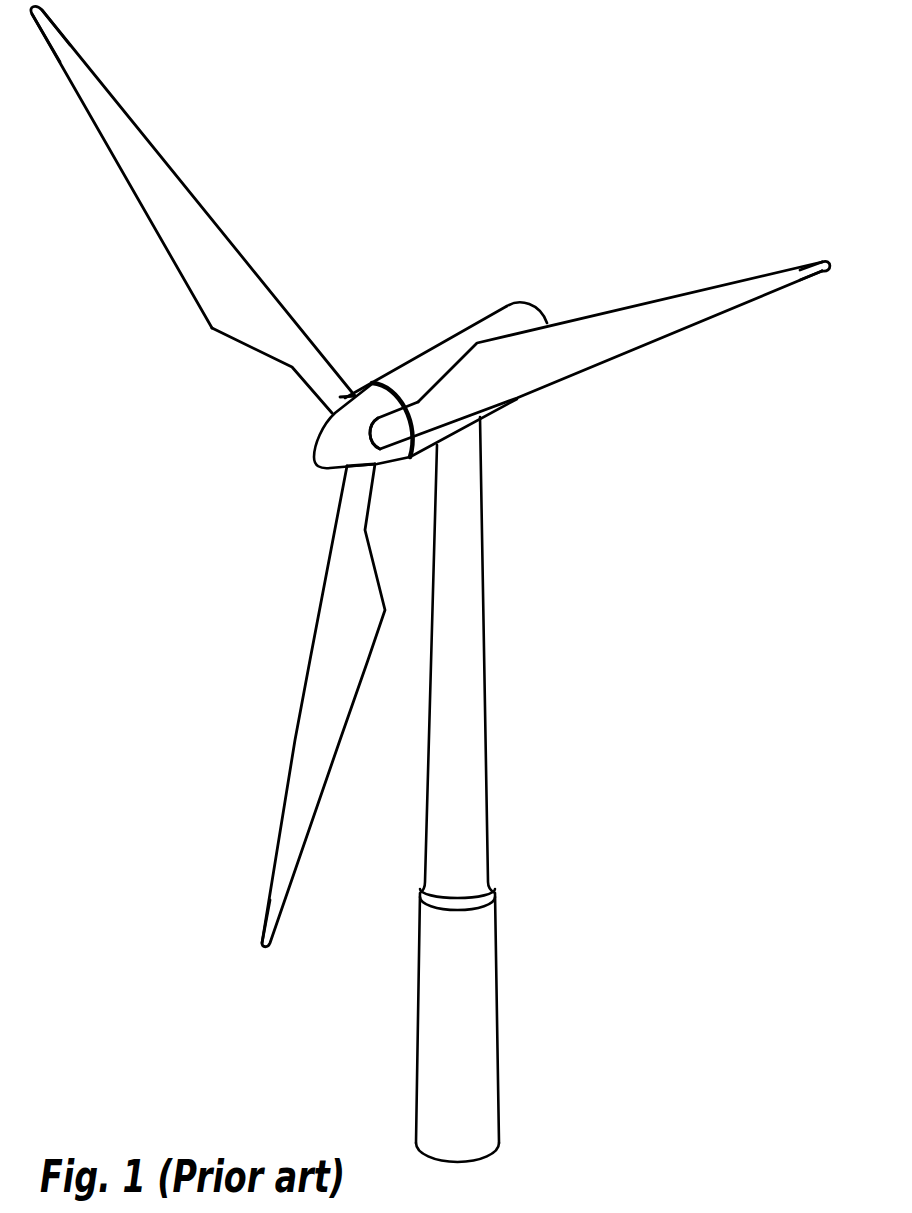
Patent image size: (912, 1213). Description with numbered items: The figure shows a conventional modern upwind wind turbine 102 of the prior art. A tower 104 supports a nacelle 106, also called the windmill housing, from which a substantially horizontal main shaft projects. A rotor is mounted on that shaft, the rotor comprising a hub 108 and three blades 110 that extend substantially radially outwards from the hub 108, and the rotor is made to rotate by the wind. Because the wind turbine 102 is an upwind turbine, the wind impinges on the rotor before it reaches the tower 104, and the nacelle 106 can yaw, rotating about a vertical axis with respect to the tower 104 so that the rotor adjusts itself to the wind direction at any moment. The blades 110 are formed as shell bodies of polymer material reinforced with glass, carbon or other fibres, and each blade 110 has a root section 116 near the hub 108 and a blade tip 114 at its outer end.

The wind turbine 102 is at (430, 584).
The tower 104 is at (475, 655).
The nacelle 106 is at (423, 365).
The hub 108 is at (332, 447).
The blade 110 is at (225, 300).
The blade tip 114 is at (70, 67).
The root section 116 is at (340, 402).